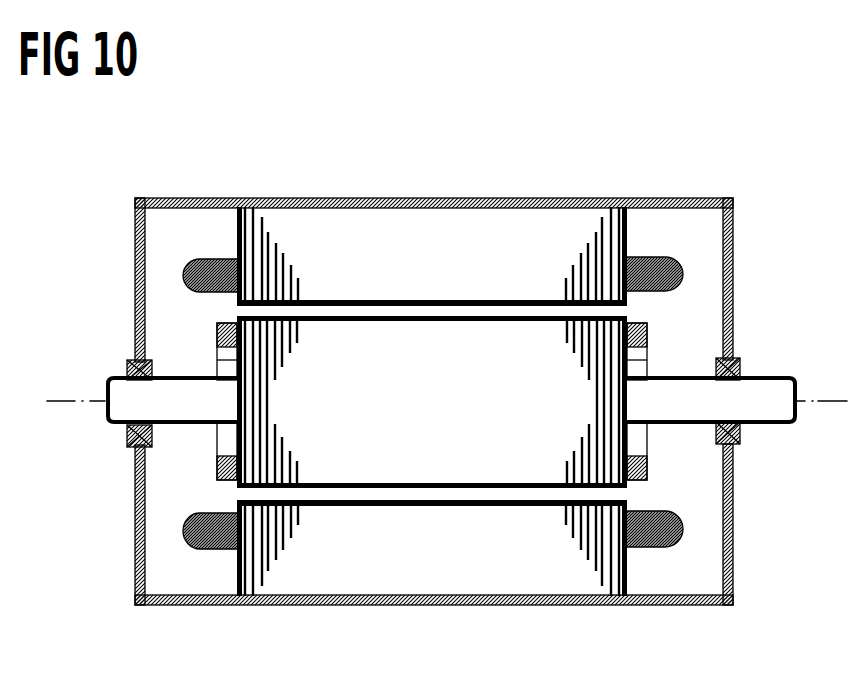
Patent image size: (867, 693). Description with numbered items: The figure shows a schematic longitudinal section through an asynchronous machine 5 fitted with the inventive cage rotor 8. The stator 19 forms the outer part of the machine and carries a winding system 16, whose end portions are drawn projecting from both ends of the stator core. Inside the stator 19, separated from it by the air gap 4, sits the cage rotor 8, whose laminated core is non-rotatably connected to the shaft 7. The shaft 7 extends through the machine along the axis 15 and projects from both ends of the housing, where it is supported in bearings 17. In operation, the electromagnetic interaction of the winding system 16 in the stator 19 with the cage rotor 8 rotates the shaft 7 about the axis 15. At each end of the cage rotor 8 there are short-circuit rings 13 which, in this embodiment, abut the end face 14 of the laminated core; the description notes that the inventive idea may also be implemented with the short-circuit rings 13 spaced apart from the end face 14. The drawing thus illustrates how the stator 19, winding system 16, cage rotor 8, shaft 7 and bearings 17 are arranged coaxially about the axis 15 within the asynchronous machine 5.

The air gap 4 is at (610, 494).
The asynchronous machine 5 is at (446, 190).
The shaft 7 is at (762, 413).
The cage rotor 8 is at (338, 468).
The short-circuit rings 13 is at (217, 335).
The end face 14 is at (217, 363).
The axis 15 is at (835, 401).
The winding system 16 is at (650, 260).
The bearings 17 is at (733, 358).
The stator 19 is at (322, 222).